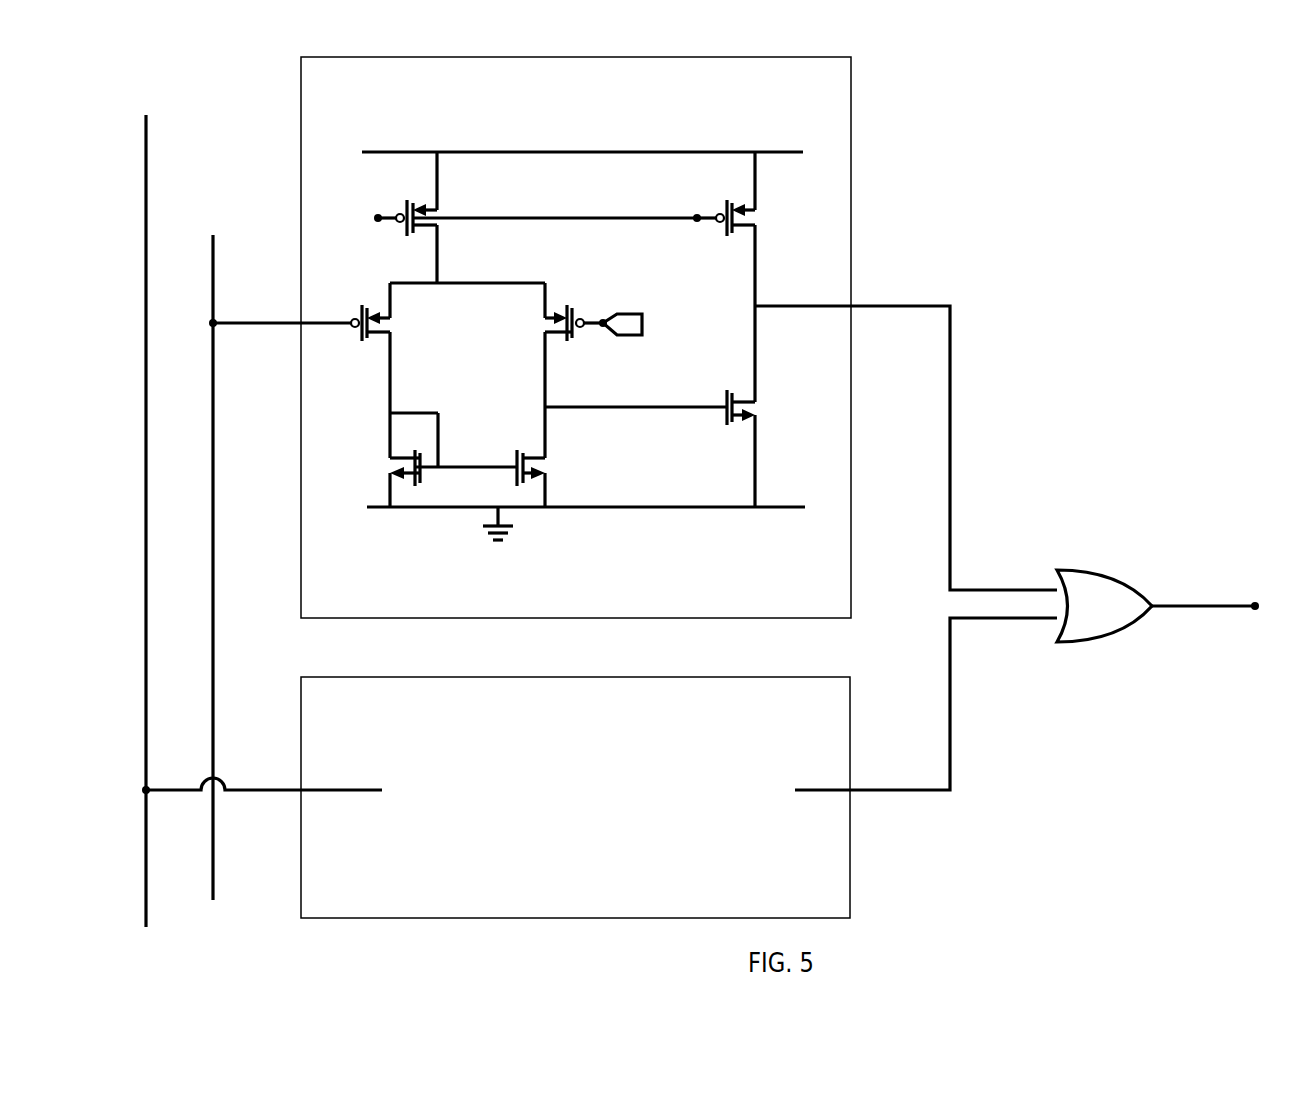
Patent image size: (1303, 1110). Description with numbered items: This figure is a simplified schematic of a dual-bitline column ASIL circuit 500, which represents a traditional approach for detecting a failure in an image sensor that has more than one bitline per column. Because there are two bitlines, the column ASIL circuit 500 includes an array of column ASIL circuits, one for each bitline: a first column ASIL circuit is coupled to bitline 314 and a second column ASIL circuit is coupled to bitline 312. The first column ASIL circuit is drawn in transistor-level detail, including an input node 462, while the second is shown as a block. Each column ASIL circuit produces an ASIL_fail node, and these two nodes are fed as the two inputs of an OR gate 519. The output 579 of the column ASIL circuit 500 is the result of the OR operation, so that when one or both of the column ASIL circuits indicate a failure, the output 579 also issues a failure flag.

The column ASIL circuit 500 is at (1116, 104).
The bitline 312 is at (146, 163).
The bitline 314 is at (213, 256).
The reference voltage input 462 is at (644, 320).
The OR gate 519 is at (1104, 606).
The output 579 is at (1258, 612).